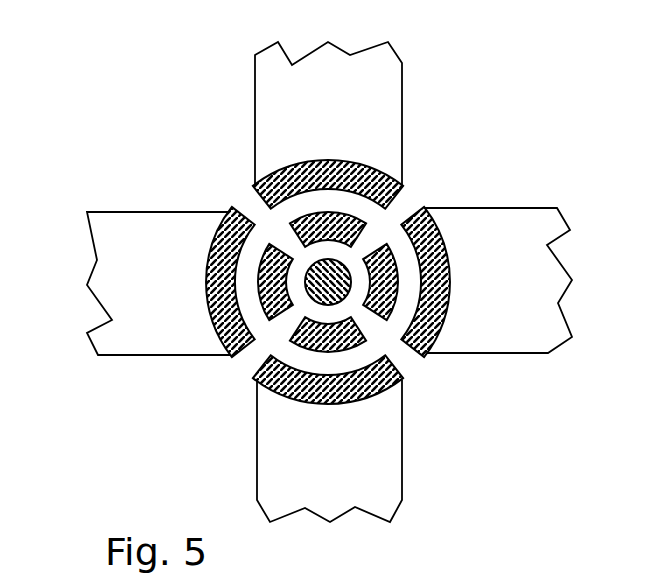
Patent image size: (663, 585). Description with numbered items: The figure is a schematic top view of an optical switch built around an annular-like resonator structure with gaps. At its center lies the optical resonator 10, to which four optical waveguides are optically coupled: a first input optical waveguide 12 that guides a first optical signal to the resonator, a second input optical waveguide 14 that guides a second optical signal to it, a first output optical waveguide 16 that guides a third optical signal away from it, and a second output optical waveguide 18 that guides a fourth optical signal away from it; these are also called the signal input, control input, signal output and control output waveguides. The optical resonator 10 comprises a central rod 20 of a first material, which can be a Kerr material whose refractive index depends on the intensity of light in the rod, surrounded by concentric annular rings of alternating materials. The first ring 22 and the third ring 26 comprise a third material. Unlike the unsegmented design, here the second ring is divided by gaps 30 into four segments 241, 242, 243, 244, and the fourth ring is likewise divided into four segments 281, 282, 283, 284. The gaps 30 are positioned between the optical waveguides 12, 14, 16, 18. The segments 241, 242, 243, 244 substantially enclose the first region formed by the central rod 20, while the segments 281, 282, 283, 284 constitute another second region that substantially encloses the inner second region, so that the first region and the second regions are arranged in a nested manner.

The optical resonator 10 is at (430, 183).
The first input optical waveguide 12 is at (112, 248).
The second input optical waveguide 14 is at (270, 80).
The first output optical waveguide 16 is at (537, 268).
The second output optical waveguide 18 is at (272, 473).
The central rod 20 is at (350, 290).
The first ring 22 is at (303, 325).
The third ring 26 is at (330, 363).
The gaps 30 is at (260, 353).
The segment of the second ring 241 is at (360, 218).
The segment of the second ring 242 is at (387, 243).
The segment of the second ring 243 is at (400, 373).
The segment of the second ring 244 is at (265, 252).
The segment of the fourth ring 281 is at (397, 187).
The segment of the fourth ring 282 is at (447, 263).
The segment of the fourth ring 283 is at (343, 397).
The segment of the fourth ring 284 is at (243, 220).